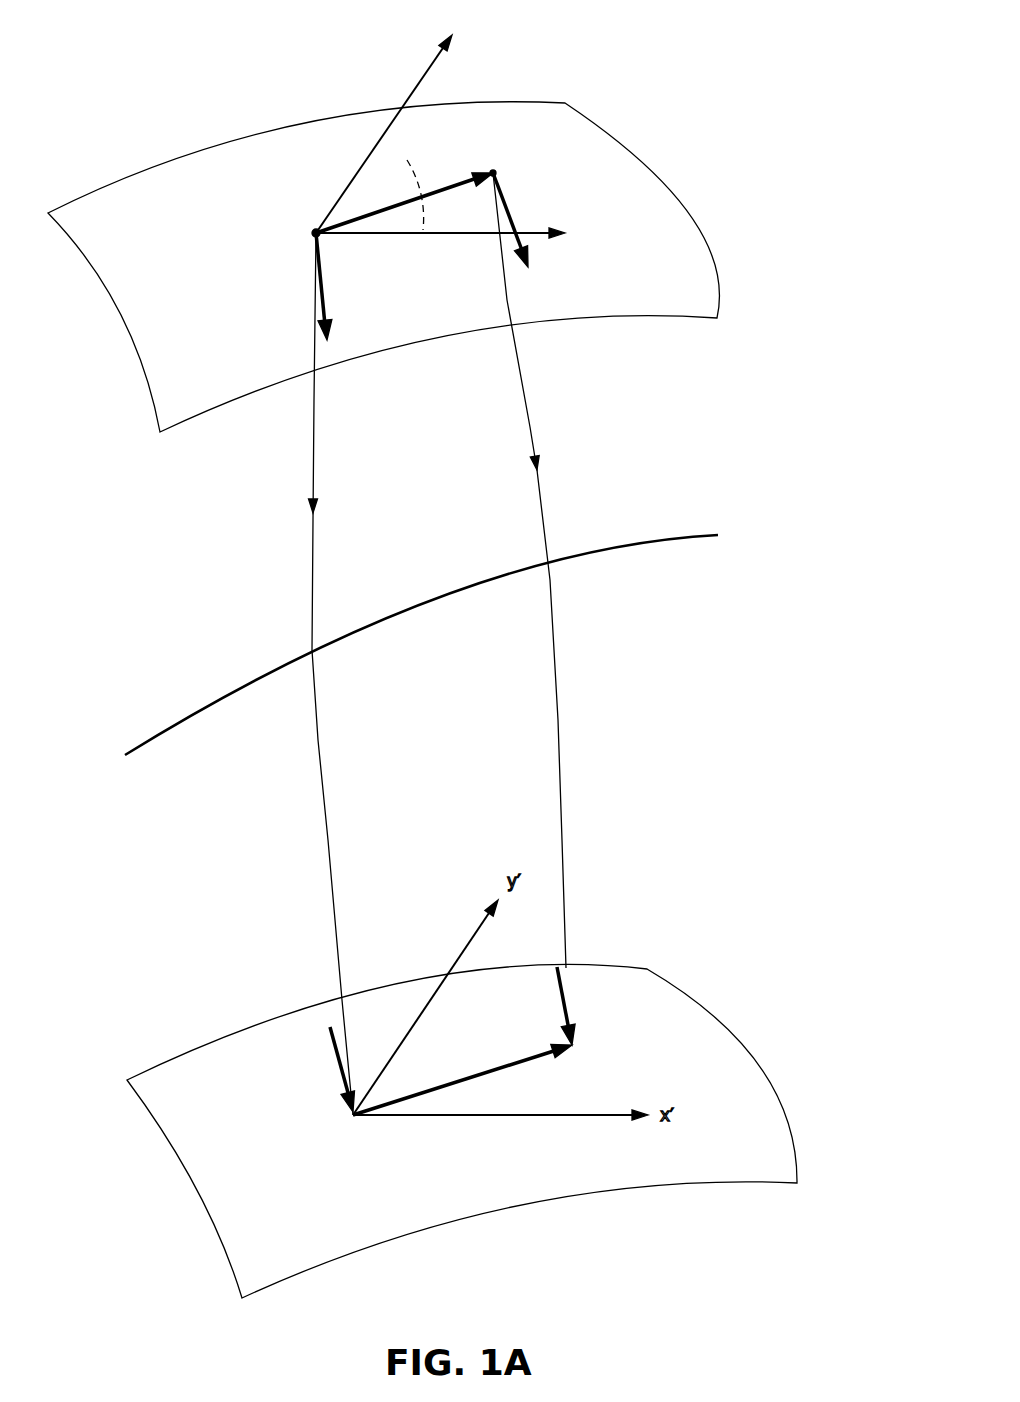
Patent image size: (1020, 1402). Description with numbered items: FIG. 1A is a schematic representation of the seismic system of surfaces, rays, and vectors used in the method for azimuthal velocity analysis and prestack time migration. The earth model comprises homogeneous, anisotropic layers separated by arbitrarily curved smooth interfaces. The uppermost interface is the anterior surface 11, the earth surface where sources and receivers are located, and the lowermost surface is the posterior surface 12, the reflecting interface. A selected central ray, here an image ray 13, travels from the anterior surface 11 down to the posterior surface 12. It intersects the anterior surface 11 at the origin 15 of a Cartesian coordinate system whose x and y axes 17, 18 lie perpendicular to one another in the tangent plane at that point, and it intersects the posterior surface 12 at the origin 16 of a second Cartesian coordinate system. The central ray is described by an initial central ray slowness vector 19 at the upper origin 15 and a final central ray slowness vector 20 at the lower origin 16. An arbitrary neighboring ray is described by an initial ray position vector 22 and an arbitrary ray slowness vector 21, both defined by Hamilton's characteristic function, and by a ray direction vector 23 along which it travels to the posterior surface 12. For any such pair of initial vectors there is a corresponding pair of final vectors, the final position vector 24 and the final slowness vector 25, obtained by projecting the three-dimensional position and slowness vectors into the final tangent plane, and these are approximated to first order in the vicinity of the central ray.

The anterior surface 11 is at (623, 193).
The posterior surface 12 is at (740, 1077).
The image ray 13 is at (310, 586).
The origin 15 is at (312, 231).
The origin 16 is at (350, 1117).
The x axis 17 is at (452, 235).
The y axis 18 is at (427, 70).
The initial central ray slowness vector 19 is at (316, 296).
The final central ray slowness vector 20 is at (340, 1072).
The ray slowness vector 21 is at (510, 213).
The ray position vector 22 is at (415, 200).
The ray direction vector 23 is at (531, 427).
The final position vector 24 is at (462, 1079).
The final slowness vector 25 is at (563, 985).